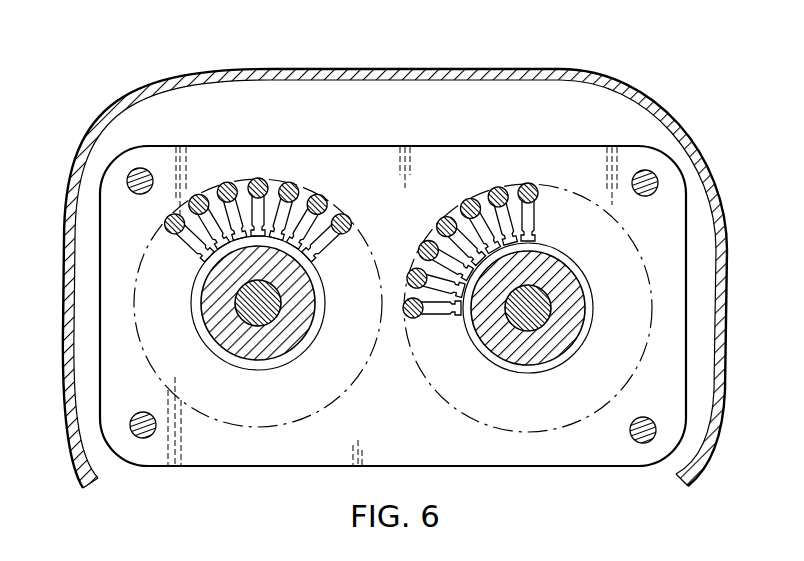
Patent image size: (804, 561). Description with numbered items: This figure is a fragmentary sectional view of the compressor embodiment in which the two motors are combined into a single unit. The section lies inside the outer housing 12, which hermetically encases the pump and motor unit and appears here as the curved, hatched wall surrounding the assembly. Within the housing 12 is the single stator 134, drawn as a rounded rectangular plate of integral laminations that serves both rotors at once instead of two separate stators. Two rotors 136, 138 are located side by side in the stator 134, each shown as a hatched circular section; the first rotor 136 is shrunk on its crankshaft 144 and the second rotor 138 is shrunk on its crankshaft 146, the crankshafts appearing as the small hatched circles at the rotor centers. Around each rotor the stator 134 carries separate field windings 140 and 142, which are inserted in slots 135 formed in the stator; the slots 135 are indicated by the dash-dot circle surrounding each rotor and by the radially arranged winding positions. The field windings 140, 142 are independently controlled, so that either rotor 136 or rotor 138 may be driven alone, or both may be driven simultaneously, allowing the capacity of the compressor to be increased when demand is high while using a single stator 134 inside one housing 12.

The outer housing 12 is at (643, 104).
The single stator 134 is at (271, 457).
The slots 135 is at (377, 271).
The rotor 136 is at (243, 343).
The rotor 138 is at (578, 319).
The field windings 140 is at (292, 182).
The field windings 142 is at (531, 182).
The crankshaft 144 is at (274, 319).
The crankshaft 146 is at (509, 318).